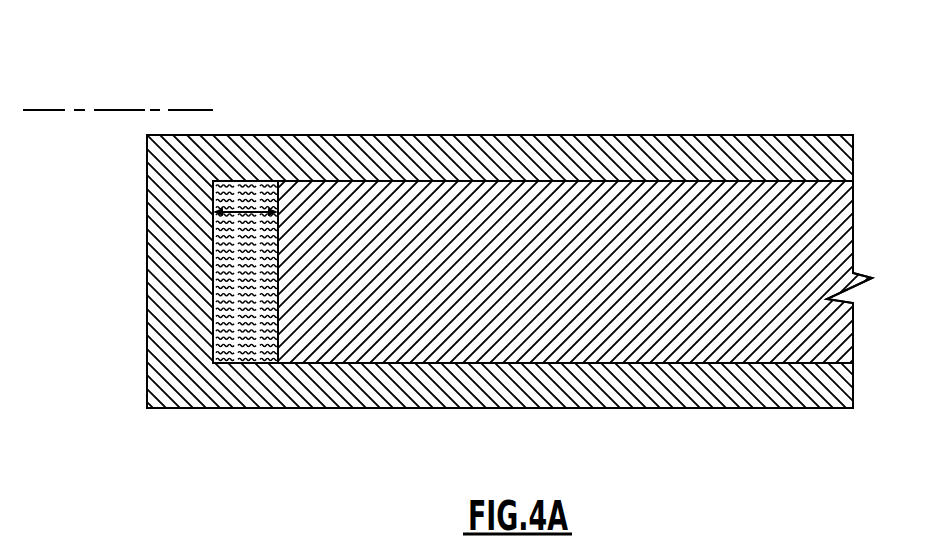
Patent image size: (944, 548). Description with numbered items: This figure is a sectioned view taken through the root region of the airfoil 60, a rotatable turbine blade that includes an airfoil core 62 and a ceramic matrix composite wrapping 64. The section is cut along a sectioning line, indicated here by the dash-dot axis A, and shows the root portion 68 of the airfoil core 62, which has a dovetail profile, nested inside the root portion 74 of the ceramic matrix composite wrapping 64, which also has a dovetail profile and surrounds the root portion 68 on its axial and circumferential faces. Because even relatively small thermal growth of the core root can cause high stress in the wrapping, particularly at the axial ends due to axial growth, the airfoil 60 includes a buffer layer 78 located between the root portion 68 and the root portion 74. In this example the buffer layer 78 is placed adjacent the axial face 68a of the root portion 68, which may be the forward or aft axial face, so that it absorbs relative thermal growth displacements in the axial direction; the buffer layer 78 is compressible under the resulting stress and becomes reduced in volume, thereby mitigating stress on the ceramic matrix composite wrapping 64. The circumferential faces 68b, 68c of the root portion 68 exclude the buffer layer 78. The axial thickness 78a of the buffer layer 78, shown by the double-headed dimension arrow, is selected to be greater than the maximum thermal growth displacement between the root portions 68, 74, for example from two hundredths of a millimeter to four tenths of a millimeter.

The central axis A is at (112, 110).
The airfoil 60 is at (240, 75).
The airfoil core 62 is at (692, 168).
The ceramic matrix composite wrapping 64 is at (352, 421).
The root portion 68 is at (558, 213).
The axial face 68a is at (272, 340).
The circumferential face 68b is at (440, 181).
The circumferential face 68c is at (698, 363).
The root portion 74 is at (298, 383).
The buffer layer 78 is at (228, 362).
The axial thickness of the buffer layer 78a is at (249, 212).